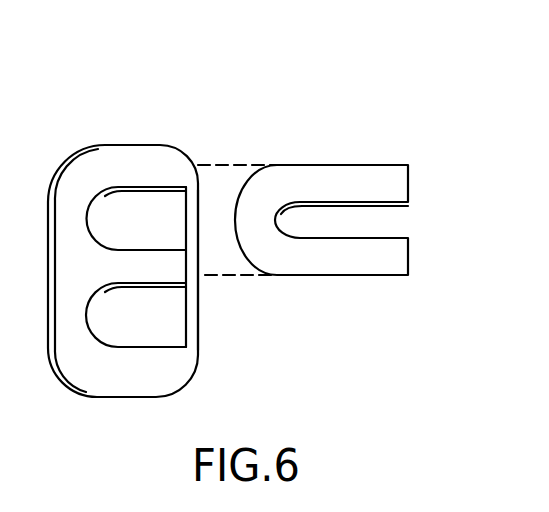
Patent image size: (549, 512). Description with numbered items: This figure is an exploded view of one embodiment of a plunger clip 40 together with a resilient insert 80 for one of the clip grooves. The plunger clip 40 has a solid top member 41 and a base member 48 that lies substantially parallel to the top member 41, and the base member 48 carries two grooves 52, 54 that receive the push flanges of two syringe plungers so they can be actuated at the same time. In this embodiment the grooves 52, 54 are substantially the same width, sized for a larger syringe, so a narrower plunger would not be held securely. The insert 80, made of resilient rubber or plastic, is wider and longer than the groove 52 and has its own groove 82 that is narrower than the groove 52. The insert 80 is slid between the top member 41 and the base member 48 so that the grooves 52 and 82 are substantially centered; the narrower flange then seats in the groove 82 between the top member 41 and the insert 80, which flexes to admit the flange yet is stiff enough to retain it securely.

The plunger clip 40 is at (174, 220).
The base member 48 is at (170, 153).
The groove 52 is at (167, 207).
The groove 54 is at (170, 310).
The top member 41 is at (198, 222).
The resilient insert 80 is at (319, 274).
The groove 82 is at (393, 223).